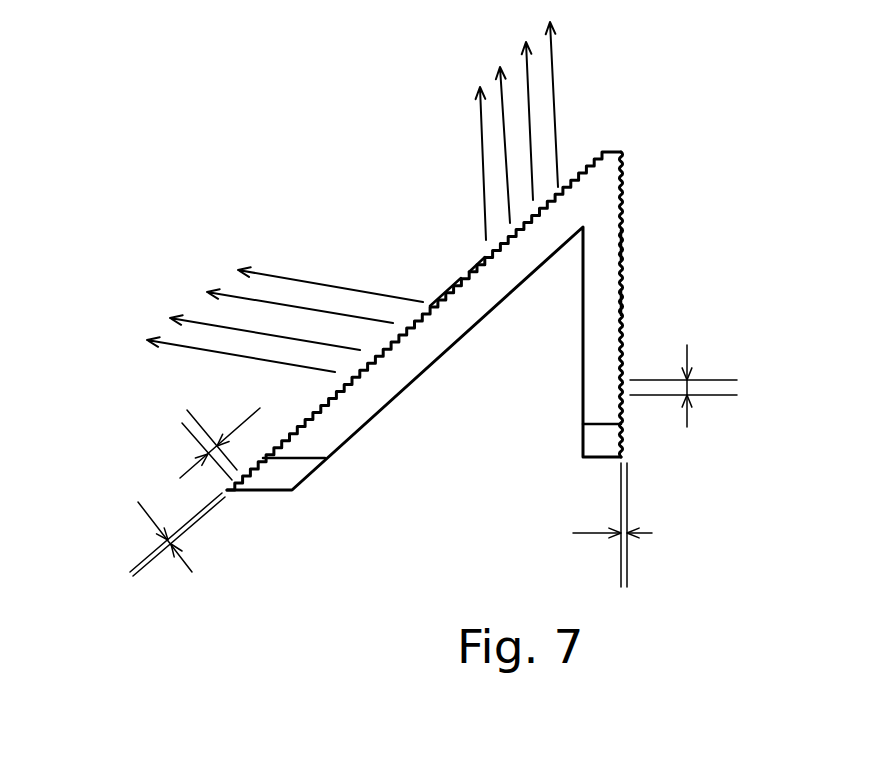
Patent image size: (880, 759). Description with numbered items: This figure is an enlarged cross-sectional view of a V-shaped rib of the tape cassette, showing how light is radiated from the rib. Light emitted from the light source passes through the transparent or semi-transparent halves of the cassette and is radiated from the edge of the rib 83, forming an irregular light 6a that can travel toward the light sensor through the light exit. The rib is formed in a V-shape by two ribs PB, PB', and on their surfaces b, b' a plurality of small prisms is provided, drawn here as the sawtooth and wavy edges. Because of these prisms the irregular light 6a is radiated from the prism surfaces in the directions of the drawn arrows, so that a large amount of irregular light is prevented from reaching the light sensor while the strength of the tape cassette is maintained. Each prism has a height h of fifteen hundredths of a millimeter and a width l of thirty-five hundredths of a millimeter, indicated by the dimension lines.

The rib 83 is at (618, 150).
The irregular light 6a is at (352, 192).
The rib PB is at (417, 221).
The surface b is at (461, 203).
The surface b' is at (683, 236).
The rib PB' is at (662, 303).
The width l is at (454, 412).
The height h is at (404, 525).